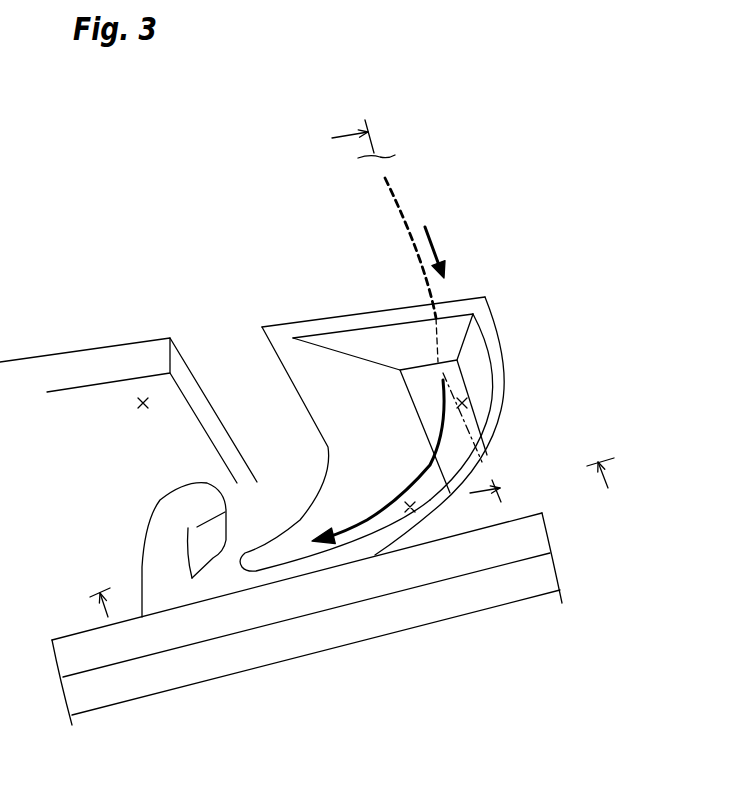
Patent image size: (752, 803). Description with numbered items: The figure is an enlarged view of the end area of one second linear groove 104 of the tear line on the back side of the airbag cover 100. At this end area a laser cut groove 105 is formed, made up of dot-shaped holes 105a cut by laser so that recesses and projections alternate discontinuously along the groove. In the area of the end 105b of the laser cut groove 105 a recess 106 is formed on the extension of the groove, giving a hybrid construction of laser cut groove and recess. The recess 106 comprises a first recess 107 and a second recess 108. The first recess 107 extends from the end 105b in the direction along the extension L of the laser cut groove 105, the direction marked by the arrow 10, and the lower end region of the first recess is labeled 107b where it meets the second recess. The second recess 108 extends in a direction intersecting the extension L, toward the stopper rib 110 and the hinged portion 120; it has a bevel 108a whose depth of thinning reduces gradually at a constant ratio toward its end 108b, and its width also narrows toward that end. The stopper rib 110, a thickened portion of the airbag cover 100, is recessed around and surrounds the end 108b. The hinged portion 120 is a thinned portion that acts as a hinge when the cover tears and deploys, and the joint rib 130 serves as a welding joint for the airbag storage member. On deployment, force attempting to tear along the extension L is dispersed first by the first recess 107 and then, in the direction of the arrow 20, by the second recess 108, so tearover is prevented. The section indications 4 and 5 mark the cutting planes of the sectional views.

The airbag cover 100 is at (252, 193).
The second linear groove 104 is at (382, 167).
The laser cut groove 105 is at (498, 306).
The holes 105a is at (403, 228).
The end of the laser cut groove 105b is at (432, 317).
The arrow 10 is at (436, 246).
The first recess 107 is at (503, 397).
The recess 106 is at (506, 396).
The lower end of curved wall 107b is at (490, 463).
The extension L is at (496, 452).
The arrow 20 is at (407, 483).
The hinged portion 120 is at (141, 398).
The stopper rib 110 is at (192, 578).
The second recess 108 is at (415, 520).
The bevel 108a is at (348, 540).
The end of the second recess 108b is at (259, 598).
The joint rib 130 is at (453, 557).
The section line 4- 4 is at (414, 313).
The section line 5- 5 is at (350, 542).